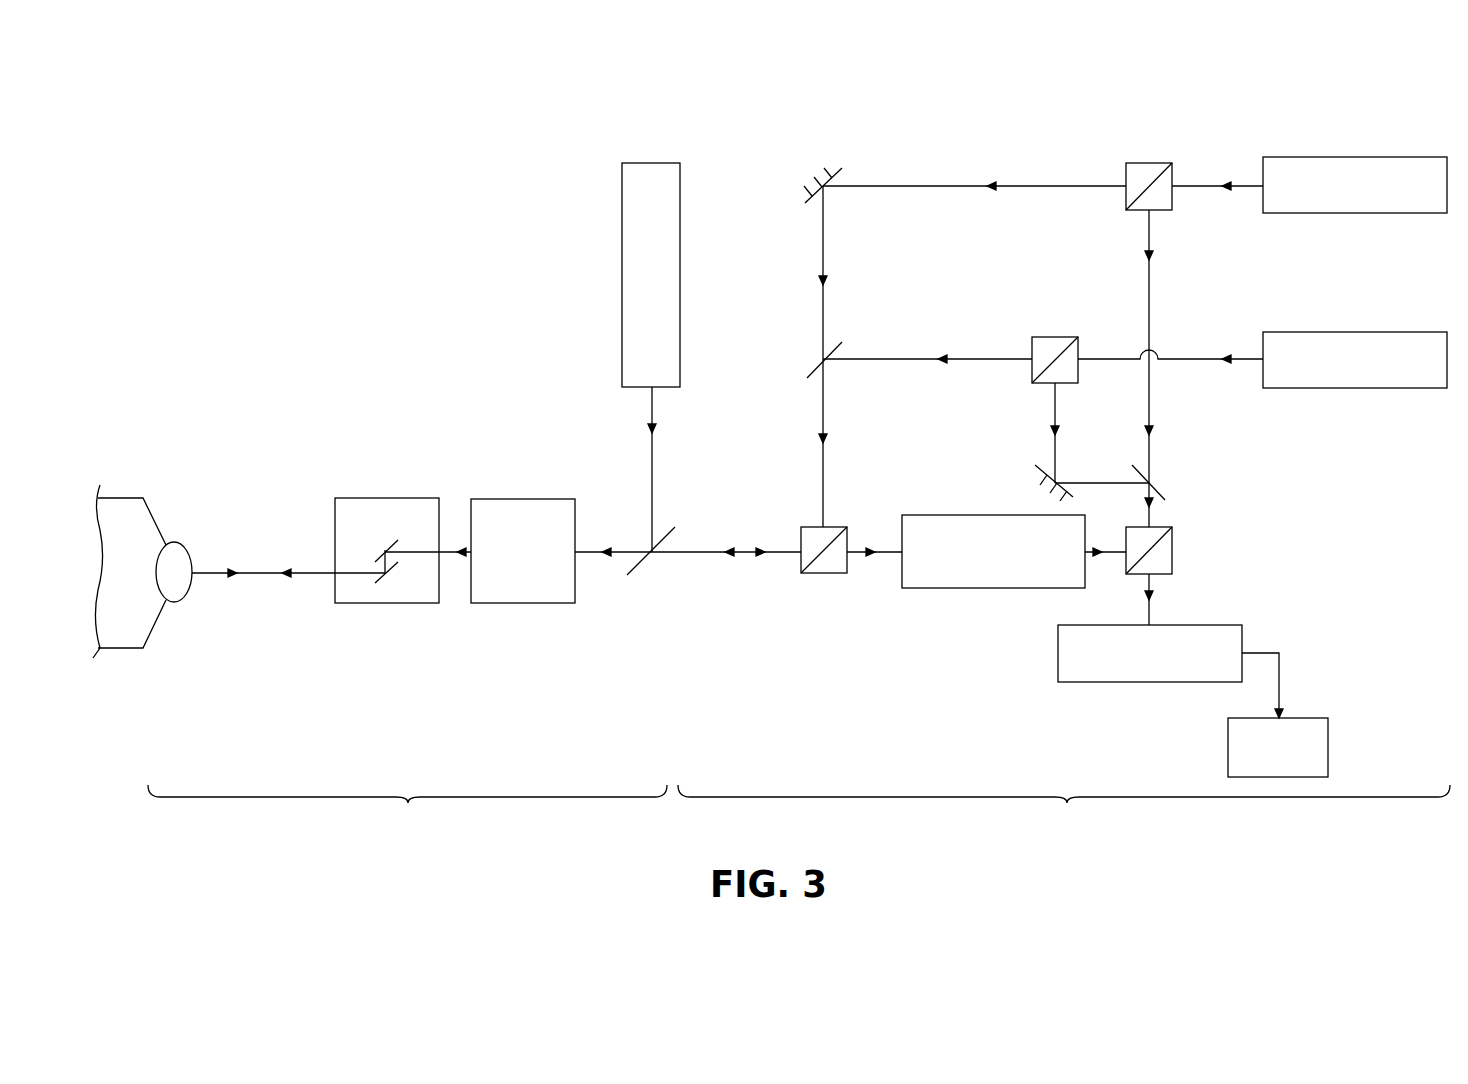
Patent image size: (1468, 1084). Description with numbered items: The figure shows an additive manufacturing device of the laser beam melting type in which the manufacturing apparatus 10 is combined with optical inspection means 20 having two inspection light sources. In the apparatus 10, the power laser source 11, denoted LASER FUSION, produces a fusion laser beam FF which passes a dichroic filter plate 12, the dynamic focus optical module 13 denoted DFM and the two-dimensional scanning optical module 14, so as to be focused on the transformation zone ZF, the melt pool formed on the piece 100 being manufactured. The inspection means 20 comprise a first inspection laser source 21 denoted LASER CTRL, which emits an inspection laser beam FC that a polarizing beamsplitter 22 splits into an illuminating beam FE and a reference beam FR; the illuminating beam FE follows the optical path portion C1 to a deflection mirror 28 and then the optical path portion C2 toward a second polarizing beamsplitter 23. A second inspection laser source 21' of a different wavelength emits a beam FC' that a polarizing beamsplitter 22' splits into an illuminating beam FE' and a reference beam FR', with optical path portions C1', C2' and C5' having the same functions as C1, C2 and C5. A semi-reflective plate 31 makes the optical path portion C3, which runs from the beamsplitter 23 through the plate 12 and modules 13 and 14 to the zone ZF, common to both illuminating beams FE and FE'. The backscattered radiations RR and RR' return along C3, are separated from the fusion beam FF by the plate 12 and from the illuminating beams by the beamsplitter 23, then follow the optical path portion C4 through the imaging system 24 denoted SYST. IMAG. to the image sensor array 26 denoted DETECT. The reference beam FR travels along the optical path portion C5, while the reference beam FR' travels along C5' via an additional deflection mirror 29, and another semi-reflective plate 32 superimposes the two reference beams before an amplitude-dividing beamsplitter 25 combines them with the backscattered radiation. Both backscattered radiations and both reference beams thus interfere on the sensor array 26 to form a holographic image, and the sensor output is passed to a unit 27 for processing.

The piece being manufactured 100 is at (130, 650).
The transformation zone ZF is at (182, 600).
The two-dimensional scanning optical module 14 is at (365, 603).
The dynamic focus optical module 13 is at (505, 603).
The dichroic filter plate 12 is at (642, 563).
The power laser source 11 is at (622, 245).
The LBM manufacturing apparatus 10 is at (407, 811).
The optical inspection means 20 is at (1064, 811).
The deflection mirror 28 is at (818, 180).
The semi-reflective plate 31 is at (812, 370).
The polarizing beamsplitter 22 is at (1142, 158).
The polarizing beamsplitter 22' is at (1046, 332).
The inspection laser source 21 is at (1355, 158).
The second inspection laser source 21' is at (1355, 333).
The additional deflection mirror 29 is at (1040, 478).
The semi-reflective plate 32 is at (1163, 492).
The second polarizing beamsplitter 23 is at (815, 575).
The imaging system 24 is at (992, 588).
The amplitude-dividing beamsplitter 25 is at (1173, 542).
The image sensor array 26 is at (1102, 682).
The CPU 27 is at (1328, 738).
The fusion laser beam FF is at (648, 435).
The illuminating beam FE is at (899, 372).
The illuminating beam FE' is at (927, 334).
The inspection laser beam FC is at (1217, 160).
The inspection laser beam FC' is at (1170, 333).
The reference beam FR is at (1242, 368).
The reference beam FR' is at (1063, 454).
The backscattered radiation RR is at (230, 496).
The backscattered radiation RR' is at (908, 598).
The optical path portion C1 is at (1031, 156).
The optical path portion C1' is at (979, 331).
The optical path portion C2 is at (857, 356).
The optical path portion C2' is at (861, 399).
The optical path portion C3 is at (697, 550).
The optical path portion C4 is at (890, 548).
The optical path portion C5 is at (1185, 389).
The optical path portion C5' is at (1092, 433).